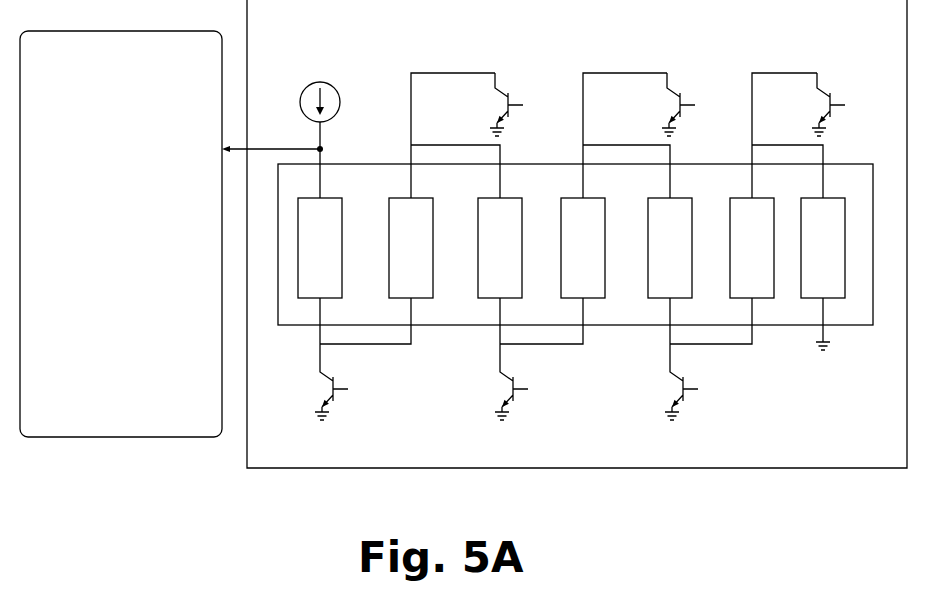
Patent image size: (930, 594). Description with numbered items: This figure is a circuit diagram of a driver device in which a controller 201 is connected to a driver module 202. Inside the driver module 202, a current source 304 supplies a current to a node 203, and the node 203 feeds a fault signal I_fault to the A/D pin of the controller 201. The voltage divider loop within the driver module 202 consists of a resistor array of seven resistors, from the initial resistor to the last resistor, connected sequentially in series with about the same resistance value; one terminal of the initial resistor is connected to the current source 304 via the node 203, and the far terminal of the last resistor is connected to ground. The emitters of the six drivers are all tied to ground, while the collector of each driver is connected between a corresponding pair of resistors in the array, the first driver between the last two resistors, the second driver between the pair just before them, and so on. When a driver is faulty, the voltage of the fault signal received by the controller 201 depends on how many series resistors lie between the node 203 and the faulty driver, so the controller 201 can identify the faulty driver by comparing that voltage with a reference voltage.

The controller 201 is at (121, 234).
The driver module 202 is at (577, 234).
The node 203 is at (259, 158).
The current source 304 is at (310, 90).